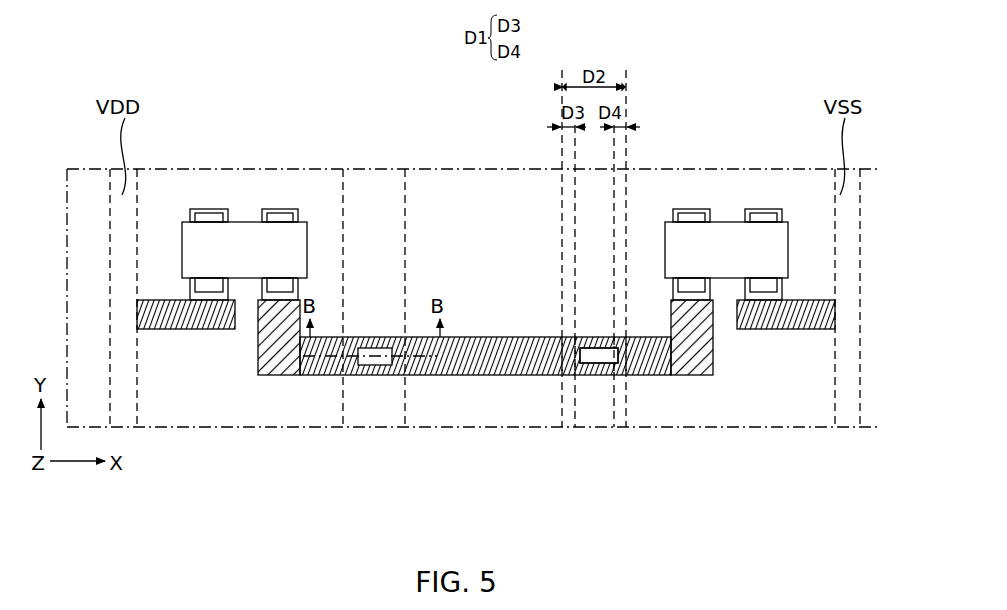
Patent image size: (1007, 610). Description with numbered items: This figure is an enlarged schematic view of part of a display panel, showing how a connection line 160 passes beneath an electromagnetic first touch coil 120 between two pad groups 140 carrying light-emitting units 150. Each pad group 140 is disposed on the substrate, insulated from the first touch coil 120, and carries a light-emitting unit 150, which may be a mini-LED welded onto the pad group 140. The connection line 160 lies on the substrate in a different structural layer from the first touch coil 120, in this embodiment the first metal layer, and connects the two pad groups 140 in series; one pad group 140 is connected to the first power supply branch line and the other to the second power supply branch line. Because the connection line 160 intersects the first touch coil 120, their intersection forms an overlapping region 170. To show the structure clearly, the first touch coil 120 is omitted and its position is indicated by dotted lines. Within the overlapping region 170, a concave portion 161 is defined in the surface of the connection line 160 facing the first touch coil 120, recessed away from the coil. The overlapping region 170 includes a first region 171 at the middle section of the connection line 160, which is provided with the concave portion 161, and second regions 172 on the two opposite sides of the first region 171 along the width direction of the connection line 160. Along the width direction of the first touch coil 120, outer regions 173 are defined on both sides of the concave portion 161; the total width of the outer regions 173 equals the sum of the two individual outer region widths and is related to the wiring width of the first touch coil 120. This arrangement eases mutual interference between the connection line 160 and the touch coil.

The first touch coil 120 is at (357, 200).
The pad group 140 is at (205, 214).
The light-emitting unit 150 is at (268, 232).
The connection line 160 is at (470, 342).
The concave portion 161 is at (609, 362).
The overlapping region 170 is at (538, 428).
The first region 171 is at (561, 355).
The second region 172 is at (578, 366).
The outer region 173 is at (621, 345).